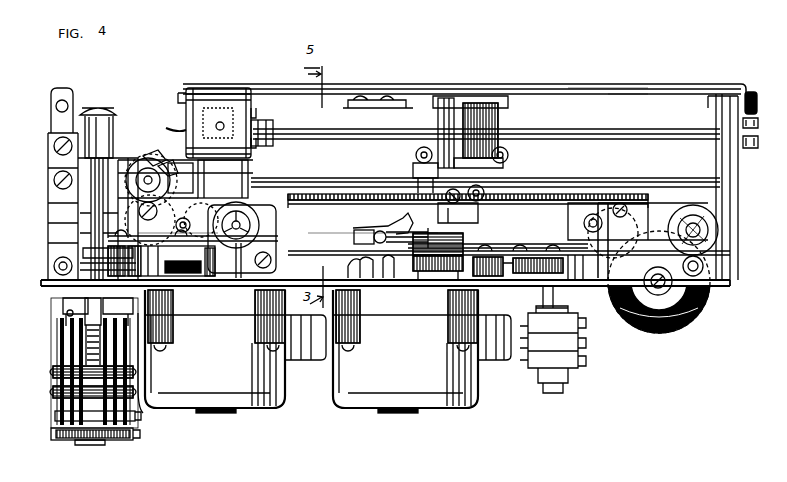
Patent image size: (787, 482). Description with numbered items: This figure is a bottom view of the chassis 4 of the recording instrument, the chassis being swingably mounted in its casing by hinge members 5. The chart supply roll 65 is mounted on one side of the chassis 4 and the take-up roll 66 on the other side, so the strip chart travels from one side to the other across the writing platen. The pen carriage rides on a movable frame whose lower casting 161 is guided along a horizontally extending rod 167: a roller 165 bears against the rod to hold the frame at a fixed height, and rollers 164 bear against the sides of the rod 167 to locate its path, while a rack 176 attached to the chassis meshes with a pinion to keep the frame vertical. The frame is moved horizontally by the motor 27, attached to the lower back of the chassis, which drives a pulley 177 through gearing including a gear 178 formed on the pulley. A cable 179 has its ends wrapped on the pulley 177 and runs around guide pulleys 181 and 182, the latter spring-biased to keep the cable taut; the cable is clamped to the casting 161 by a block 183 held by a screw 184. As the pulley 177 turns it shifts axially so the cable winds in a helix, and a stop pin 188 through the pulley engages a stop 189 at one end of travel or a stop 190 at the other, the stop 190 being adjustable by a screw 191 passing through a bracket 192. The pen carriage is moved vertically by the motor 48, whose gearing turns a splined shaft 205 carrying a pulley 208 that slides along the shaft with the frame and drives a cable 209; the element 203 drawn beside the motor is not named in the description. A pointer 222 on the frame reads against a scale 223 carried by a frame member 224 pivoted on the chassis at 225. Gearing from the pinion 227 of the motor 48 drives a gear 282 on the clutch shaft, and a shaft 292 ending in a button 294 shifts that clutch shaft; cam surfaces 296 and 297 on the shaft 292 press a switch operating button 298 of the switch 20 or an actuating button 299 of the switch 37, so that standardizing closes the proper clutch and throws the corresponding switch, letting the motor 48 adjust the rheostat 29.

The chassis 4 is at (712, 244).
The hinge members 5 is at (45, 95).
The switch 20 is at (45, 373).
The motor 27 is at (356, 405).
The rheostat 29 is at (45, 408).
The switch 37 is at (135, 405).
The motor 48 is at (282, 378).
The chart supply roll 65 is at (673, 322).
The take-up roll 66 is at (125, 152).
The lower casting 161 is at (505, 118).
The rollers 164 is at (410, 150).
The roller 165 is at (414, 166).
The horizontally extending rod 167 is at (636, 168).
The rack 176 is at (288, 229).
The pulley 177 is at (455, 232).
The gear 178 is at (480, 240).
The cable 179 is at (296, 236).
The guide pulley 181 is at (258, 222).
The guide pulley 182 is at (705, 215).
The block 183 is at (457, 184).
The screw 184 is at (450, 207).
The stop pin 188 is at (432, 268).
The stop 189 is at (505, 272).
The stop 190 is at (346, 229).
The screw 191 is at (346, 218).
The bracket 192 is at (352, 256).
The motor 203 is at (238, 104).
The splined shaft 205 is at (283, 120).
The pulley 208 is at (486, 100).
The cable 209 is at (468, 100).
The pointer 222 is at (336, 93).
The scale 223 is at (596, 79).
The frame member 224 is at (616, 88).
The pivot 225 is at (737, 86).
The pinion 227 is at (196, 328).
The gear 282 is at (59, 251).
The shaft 292 is at (78, 157).
The button 294 is at (92, 96).
The cam surface 296 is at (70, 302).
The cam surface 297 is at (122, 302).
The switch operating button 298 is at (58, 305).
The actuating button 299 is at (120, 333).